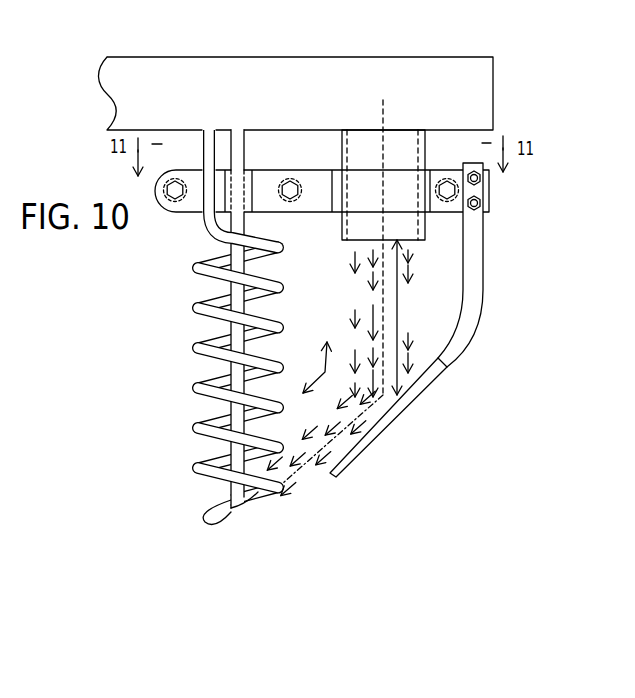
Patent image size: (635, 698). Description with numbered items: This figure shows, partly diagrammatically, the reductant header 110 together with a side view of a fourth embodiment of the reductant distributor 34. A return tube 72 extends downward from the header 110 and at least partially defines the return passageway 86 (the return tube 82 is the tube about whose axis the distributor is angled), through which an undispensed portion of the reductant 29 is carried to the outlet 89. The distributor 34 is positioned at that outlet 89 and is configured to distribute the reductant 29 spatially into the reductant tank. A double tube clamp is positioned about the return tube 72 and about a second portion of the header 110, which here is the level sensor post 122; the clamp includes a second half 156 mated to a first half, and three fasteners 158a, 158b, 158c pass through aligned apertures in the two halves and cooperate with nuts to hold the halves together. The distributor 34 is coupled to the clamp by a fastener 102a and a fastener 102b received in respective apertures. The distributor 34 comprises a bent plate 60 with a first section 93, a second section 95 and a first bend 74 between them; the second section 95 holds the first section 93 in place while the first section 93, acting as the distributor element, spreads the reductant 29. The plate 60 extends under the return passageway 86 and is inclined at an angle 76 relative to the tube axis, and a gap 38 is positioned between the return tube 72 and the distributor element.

The reductant header 110 is at (311, 38).
The return tube 82 is at (383, 114).
The return passageway 86 is at (346, 152).
The fastener 158a is at (167, 200).
The fastener 158b is at (290, 183).
The fastener 158c is at (447, 185).
The second half 156 is at (187, 215).
The fastener 102a is at (480, 186).
The fastener 102b is at (485, 212).
The second section 95 is at (485, 243).
The first bend 74 is at (476, 328).
The reductant distributor 34 is at (480, 367).
The first section 93 is at (423, 388).
The return tube 72 is at (362, 223).
The outlet 89 is at (360, 244).
The level sensor post 122 is at (239, 326).
The gap 38 is at (398, 318).
The reductant 29 is at (302, 485).
The angle 76 is at (320, 375).
The plate 60 is at (397, 450).